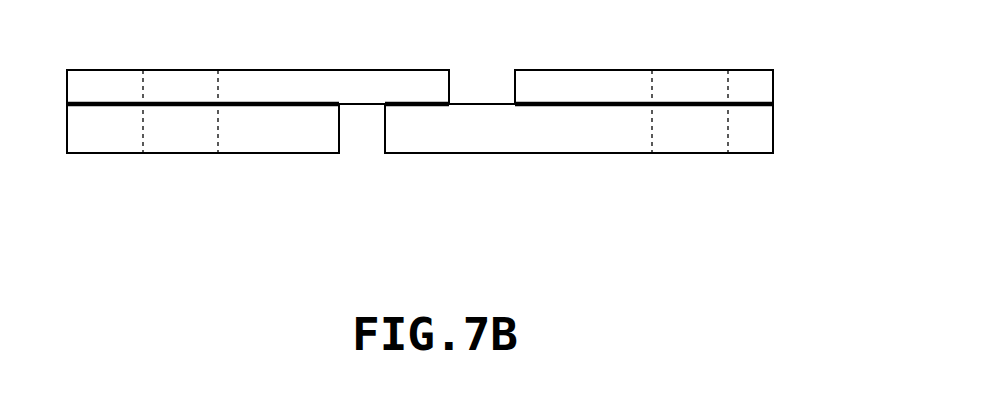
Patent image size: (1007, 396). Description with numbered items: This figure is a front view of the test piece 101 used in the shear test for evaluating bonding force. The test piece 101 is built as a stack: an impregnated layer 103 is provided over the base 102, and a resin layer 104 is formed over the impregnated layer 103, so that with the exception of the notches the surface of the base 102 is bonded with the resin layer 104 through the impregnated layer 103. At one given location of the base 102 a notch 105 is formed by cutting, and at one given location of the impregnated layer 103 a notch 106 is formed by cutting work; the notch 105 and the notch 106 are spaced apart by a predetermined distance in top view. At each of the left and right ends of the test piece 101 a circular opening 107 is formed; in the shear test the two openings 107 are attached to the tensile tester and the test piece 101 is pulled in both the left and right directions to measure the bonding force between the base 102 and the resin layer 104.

The test piece 101 is at (484, 180).
The base 102 is at (773, 128).
The impregnated layer 103 is at (773, 102).
The resin layer 104 is at (333, 70).
The notch 105 is at (340, 130).
The notch 106 is at (450, 90).
The circular opening 107 is at (218, 130).